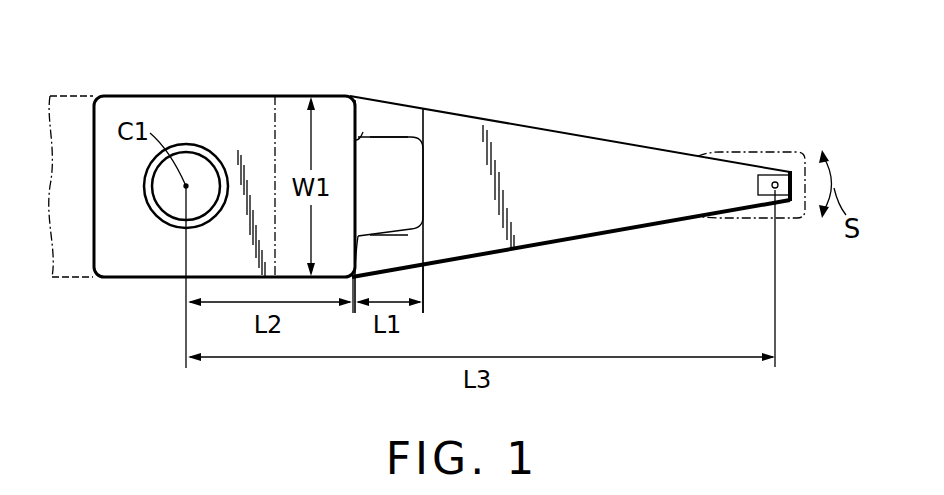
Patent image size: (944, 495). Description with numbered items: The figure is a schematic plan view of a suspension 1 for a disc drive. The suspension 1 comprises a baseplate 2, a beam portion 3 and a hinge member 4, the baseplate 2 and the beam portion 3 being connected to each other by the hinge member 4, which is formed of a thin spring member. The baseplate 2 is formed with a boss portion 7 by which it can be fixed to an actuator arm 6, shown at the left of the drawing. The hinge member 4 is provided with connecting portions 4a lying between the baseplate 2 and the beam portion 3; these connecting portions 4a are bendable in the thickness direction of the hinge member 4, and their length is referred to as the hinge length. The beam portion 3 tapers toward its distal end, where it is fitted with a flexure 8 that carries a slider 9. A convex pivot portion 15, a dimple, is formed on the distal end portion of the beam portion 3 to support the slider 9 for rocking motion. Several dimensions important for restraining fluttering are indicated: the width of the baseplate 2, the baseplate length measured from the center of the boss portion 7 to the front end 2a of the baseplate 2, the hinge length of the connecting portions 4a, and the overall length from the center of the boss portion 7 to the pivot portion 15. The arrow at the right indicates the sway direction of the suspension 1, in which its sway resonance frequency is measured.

The suspension 1 is at (582, 46).
The baseplate 2 is at (195, 103).
The front end of the baseplate 2a is at (363, 132).
The beam portion 3 is at (592, 152).
The hinge member 4 is at (407, 94).
The connecting portions 4a is at (413, 127).
The actuator arm 6 is at (73, 100).
The boss portion 7 is at (214, 157).
The flexure 8 is at (745, 152).
The slider 9 is at (783, 168).
The pivot portion 15 is at (789, 196).